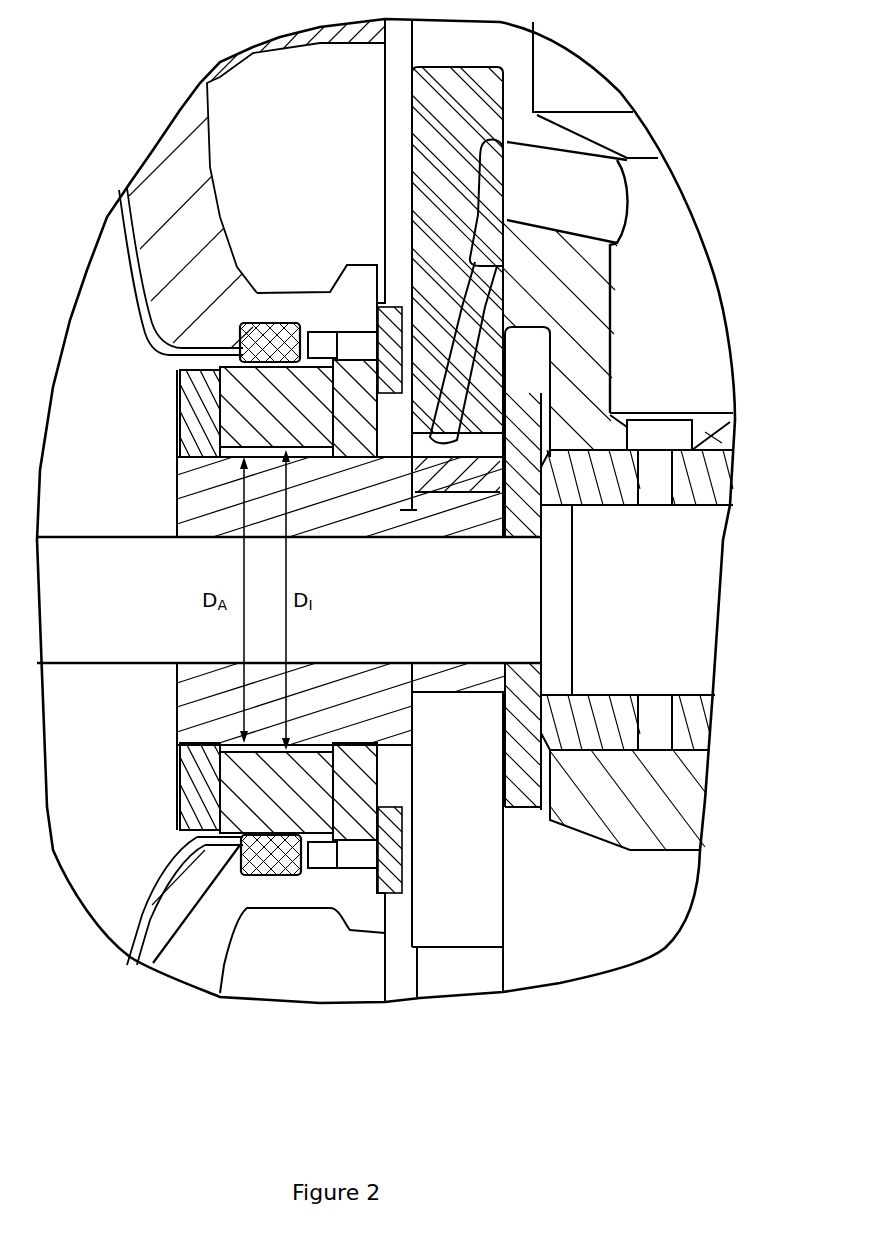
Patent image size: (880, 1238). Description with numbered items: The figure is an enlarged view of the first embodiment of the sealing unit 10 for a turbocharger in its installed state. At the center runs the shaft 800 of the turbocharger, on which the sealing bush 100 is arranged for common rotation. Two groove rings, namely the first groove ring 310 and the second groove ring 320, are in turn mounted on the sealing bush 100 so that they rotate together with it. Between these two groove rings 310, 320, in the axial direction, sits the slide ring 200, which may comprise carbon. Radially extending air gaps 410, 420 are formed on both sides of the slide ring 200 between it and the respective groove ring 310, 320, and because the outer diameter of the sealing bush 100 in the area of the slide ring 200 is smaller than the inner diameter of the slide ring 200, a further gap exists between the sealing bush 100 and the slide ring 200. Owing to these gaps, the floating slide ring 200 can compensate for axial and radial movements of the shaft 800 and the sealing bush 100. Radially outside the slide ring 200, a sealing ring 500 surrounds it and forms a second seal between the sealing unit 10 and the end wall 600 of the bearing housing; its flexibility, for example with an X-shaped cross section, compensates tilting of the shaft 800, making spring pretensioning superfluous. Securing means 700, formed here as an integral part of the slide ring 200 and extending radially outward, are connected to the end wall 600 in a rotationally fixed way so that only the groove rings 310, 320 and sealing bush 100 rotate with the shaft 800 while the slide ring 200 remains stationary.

The sealing unit 10 is at (253, 128).
The sealing bush 100 is at (220, 507).
The slide ring 200 is at (235, 380).
The first groove ring 310 is at (360, 443).
The second groove ring 320 is at (193, 433).
The air gap 410 is at (337, 400).
The air gap 420 is at (220, 388).
The sealing ring 500 is at (277, 338).
The end wall 600 is at (148, 183).
The securing means 700 is at (327, 340).
The shaft 800 is at (414, 603).